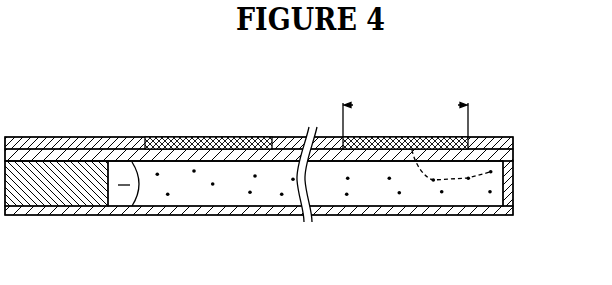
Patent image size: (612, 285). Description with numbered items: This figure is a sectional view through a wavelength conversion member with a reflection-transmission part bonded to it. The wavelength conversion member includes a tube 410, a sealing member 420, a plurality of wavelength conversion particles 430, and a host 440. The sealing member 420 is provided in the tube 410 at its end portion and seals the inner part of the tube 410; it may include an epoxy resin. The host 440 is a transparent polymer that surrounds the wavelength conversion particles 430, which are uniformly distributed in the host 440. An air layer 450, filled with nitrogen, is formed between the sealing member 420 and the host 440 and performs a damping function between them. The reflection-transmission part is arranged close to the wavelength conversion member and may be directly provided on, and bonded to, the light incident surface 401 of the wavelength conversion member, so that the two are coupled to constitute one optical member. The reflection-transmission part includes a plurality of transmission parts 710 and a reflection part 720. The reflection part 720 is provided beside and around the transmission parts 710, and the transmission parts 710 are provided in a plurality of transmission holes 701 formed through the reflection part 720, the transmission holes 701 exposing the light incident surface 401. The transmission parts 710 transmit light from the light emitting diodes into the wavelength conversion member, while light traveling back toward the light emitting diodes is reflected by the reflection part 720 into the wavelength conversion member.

The light incident surface 401 is at (514, 175).
The tube 410 is at (264, 213).
The sealing member 420 is at (58, 190).
The wavelength conversion particles 430 is at (213, 184).
The host 440 is at (156, 192).
The air layer 450 is at (125, 185).
The transmission holes 701 is at (405, 118).
The transmission parts 710 is at (182, 137).
The reflection part 720 is at (58, 143).